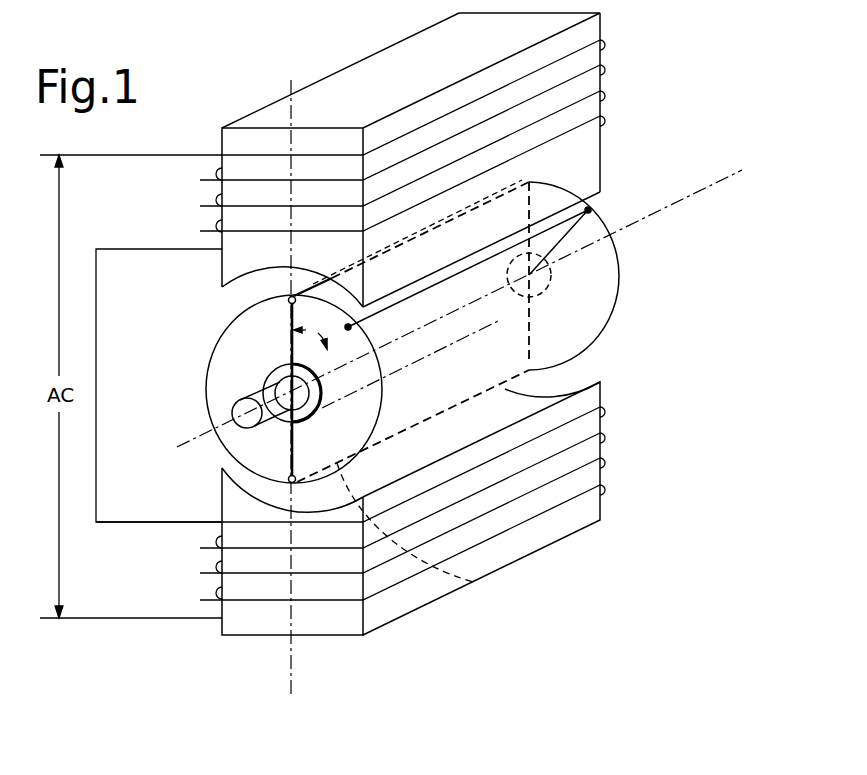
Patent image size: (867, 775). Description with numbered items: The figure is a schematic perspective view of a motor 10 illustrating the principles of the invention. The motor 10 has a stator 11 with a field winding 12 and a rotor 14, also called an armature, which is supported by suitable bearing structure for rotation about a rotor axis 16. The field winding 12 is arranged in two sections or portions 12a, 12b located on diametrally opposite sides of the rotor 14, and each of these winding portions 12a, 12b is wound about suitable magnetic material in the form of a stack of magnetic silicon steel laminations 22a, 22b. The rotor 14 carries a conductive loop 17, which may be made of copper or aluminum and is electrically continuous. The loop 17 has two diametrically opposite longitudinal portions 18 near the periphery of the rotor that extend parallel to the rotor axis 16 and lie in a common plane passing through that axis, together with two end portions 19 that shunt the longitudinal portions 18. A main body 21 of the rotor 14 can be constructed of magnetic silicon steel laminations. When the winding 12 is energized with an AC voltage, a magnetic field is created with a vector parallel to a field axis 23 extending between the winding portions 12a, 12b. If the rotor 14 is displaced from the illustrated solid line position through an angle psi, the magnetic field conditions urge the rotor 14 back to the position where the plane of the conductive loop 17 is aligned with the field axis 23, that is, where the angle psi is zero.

The motor 10 is at (227, 87).
The stator 11 is at (385, 604).
The field winding 12 is at (165, 524).
The winding portion 12a is at (224, 198).
The winding portion 12b is at (260, 602).
The rotor 14 is at (207, 408).
The rotor axis 16 is at (190, 458).
The conductive loop 17 is at (280, 347).
The loop portions 18 is at (292, 285).
The end portions 19 is at (250, 485).
The main body 21 is at (217, 388).
The stack of magnetic silicon steel laminations 22a is at (580, 164).
The stack of magnetic silicon steel laminations 22b is at (420, 597).
The field axis 23 is at (293, 645).